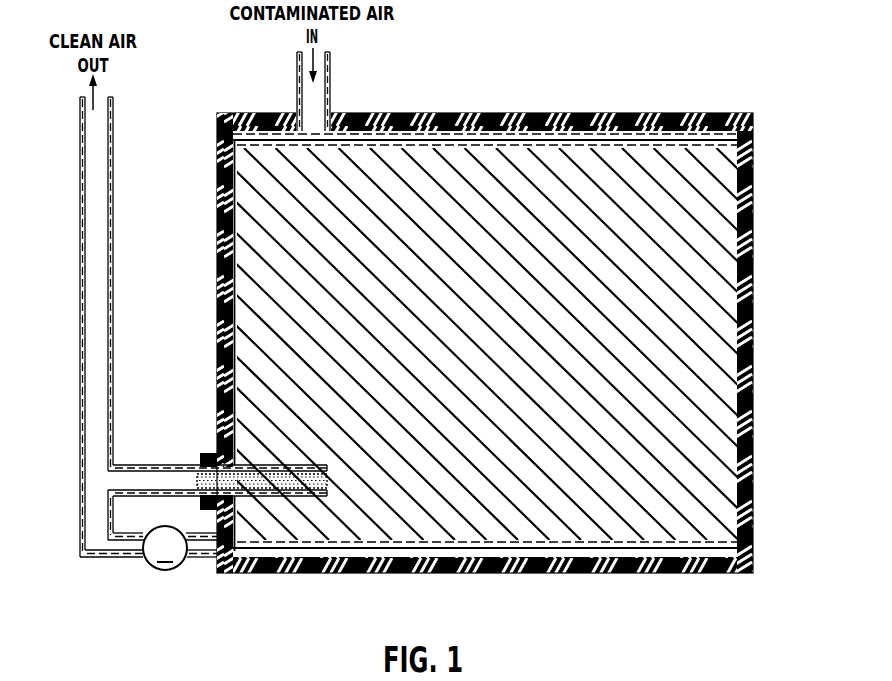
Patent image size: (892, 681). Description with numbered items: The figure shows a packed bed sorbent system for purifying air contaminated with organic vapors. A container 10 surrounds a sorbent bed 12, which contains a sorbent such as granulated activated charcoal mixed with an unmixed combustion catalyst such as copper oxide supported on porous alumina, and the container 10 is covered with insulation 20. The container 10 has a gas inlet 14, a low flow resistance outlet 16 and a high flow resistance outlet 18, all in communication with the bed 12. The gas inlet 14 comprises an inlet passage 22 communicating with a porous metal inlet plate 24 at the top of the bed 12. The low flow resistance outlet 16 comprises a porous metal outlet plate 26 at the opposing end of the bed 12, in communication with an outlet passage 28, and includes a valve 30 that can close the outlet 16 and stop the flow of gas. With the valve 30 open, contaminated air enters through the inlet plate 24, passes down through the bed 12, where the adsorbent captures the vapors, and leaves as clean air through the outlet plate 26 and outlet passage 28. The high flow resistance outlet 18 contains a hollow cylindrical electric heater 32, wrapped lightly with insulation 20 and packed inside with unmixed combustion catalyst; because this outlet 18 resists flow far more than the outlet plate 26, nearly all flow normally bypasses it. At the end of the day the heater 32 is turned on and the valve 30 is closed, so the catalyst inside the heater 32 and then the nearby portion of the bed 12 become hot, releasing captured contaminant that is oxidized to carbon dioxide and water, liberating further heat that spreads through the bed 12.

The container 10 is at (456, 100).
The sorbent bed 12 is at (688, 283).
The gas inlet 14 is at (338, 92).
The low flow resistance outlet 16 is at (550, 584).
The high flow resistance outlet 18 is at (146, 460).
The insulation 20 is at (232, 113).
The inlet passage 22 is at (297, 100).
The porous metal inlet plate 24 is at (678, 146).
The porous metal outlet plate 26 is at (720, 534).
The outlet passage 28 is at (293, 549).
The valve 30 is at (143, 561).
The electric heater 32 is at (217, 413).